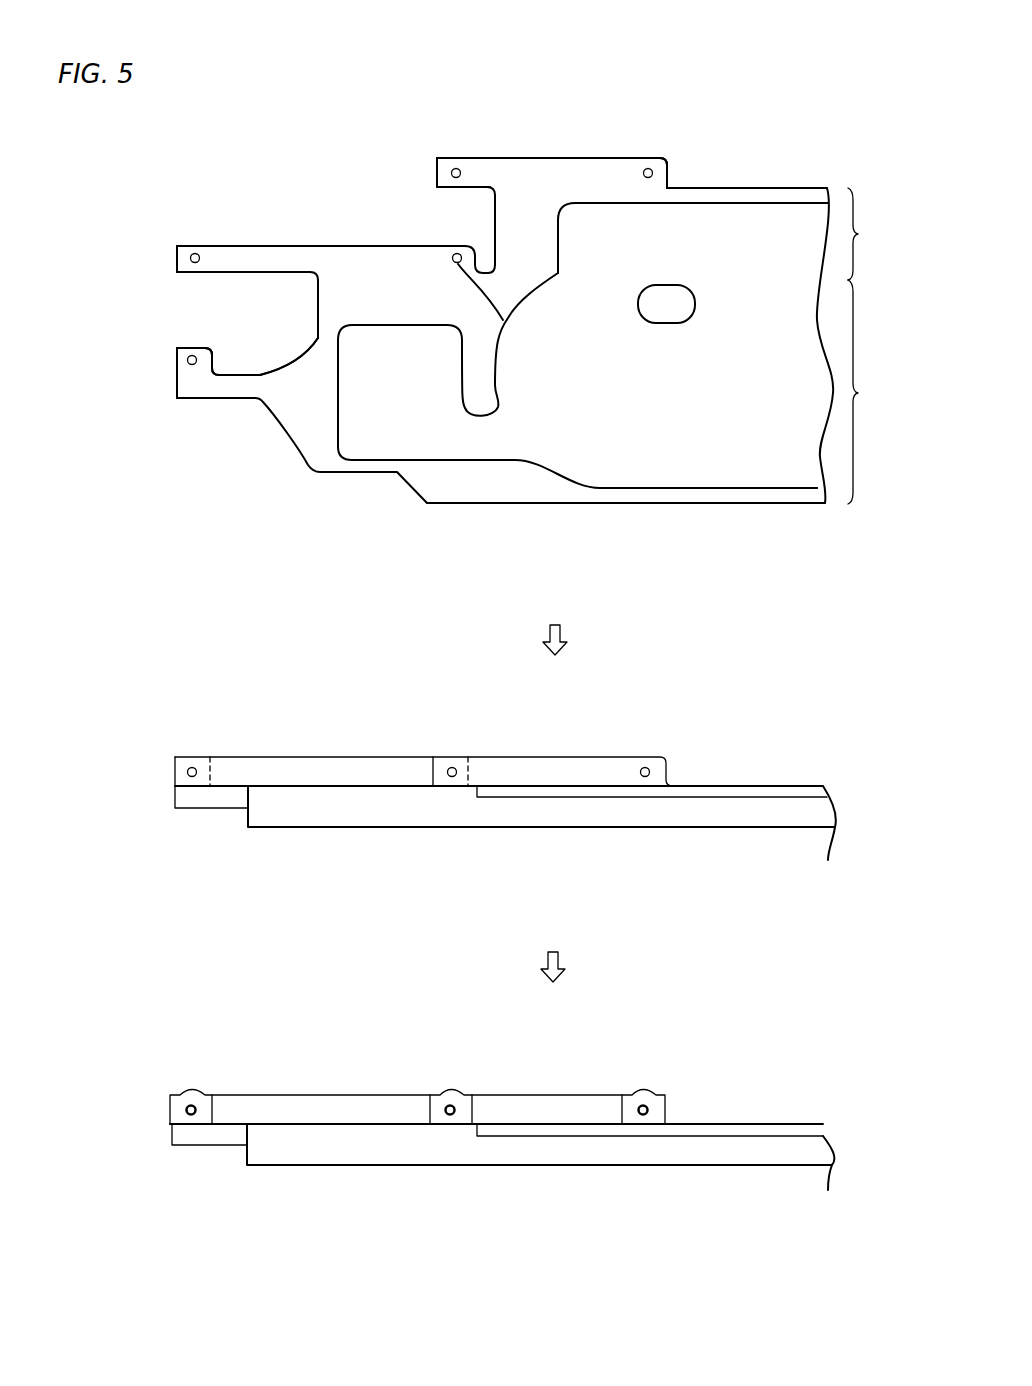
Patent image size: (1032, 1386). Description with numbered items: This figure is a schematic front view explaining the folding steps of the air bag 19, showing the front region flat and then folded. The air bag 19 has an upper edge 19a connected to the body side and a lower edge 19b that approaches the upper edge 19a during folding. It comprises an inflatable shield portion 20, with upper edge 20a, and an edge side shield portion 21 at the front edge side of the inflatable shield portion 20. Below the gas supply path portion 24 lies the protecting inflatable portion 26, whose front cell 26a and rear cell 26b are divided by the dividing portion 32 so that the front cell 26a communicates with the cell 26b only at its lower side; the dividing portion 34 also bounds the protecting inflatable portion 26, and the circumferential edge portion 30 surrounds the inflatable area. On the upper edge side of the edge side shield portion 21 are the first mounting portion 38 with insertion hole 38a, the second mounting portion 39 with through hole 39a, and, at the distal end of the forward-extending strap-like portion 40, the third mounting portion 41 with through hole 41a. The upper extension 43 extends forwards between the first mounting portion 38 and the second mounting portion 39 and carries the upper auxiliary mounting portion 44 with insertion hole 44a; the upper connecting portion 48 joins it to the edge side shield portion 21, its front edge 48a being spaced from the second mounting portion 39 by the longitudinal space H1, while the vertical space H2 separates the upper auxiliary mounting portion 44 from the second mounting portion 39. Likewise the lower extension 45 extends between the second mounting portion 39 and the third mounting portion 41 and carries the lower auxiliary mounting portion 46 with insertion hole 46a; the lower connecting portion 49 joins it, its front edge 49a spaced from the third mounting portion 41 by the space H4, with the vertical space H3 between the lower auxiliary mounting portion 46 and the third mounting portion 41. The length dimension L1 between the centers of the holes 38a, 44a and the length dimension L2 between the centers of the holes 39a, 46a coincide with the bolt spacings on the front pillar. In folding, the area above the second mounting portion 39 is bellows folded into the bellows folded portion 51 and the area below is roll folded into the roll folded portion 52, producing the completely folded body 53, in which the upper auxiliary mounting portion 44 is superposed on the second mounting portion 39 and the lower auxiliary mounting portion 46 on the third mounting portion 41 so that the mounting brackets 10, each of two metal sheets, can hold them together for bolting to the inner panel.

The mounting bracket 10 is at (193, 1093).
The air bag 19 is at (796, 170).
The upper edge 19a is at (812, 187).
The lower edge 19b is at (758, 505).
The inflatable shield portion 20 is at (714, 508).
The upper edge of inflatable shield portion 20a is at (740, 187).
The edge side shield portion 21 is at (495, 510).
The gas supply path portion 24 is at (803, 786).
The protecting inflatable portion 26 is at (733, 812).
The front cell 26a is at (378, 415).
The rear cell 26b is at (600, 480).
The circumferential edge portion 30 is at (540, 495).
The dividing portion 32 is at (465, 480).
The dividing portion 34 is at (525, 830).
The first mounting portion 38 is at (652, 165).
The insertion hole 38a is at (650, 178).
The second mounting portion 39 is at (452, 252).
The through hole 39a is at (500, 318).
The strap-like portion 40 is at (240, 392).
The third mounting portion 41 is at (178, 362).
The through hole 41a is at (188, 352).
The upper extension 43 is at (623, 163).
The upper auxiliary mounting portion 44 is at (445, 157).
The insertion hole 44a is at (437, 165).
The lower extension 45 is at (256, 245).
The lower auxiliary mounting portion 46 is at (178, 250).
The insertion hole 46a is at (190, 258).
The upper connecting portion 48 is at (513, 220).
The front edge 48a is at (497, 202).
The lower connecting portion 49 is at (316, 313).
The front edge 49a is at (320, 330).
The bellows folded portion 51 is at (718, 1122).
The roll folded portion 52 is at (720, 1225).
The completely folded body 53 is at (787, 770).
The space H1 is at (498, 258).
The space H2 is at (480, 230).
The space H3 is at (200, 317).
The space H4 is at (258, 365).
The length dimension L1 is at (648, 158).
The length dimension L2 is at (195, 264).